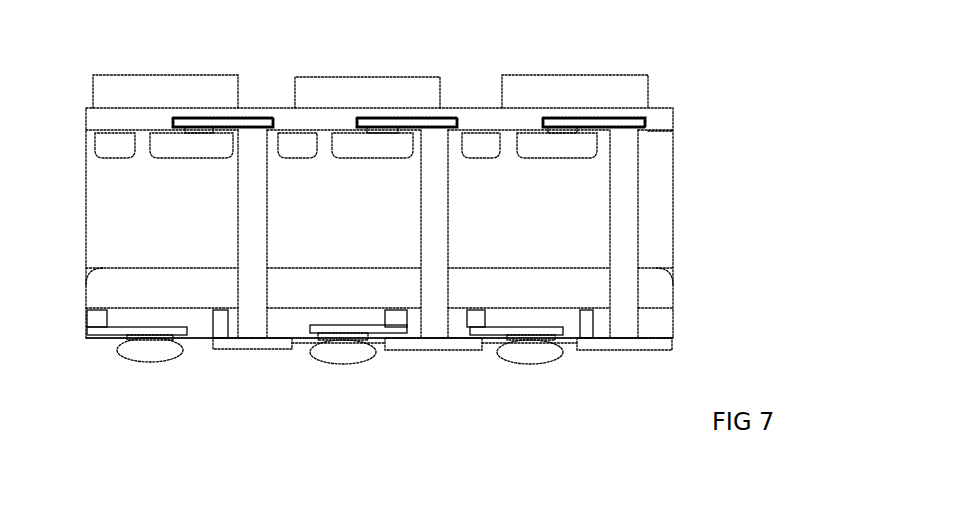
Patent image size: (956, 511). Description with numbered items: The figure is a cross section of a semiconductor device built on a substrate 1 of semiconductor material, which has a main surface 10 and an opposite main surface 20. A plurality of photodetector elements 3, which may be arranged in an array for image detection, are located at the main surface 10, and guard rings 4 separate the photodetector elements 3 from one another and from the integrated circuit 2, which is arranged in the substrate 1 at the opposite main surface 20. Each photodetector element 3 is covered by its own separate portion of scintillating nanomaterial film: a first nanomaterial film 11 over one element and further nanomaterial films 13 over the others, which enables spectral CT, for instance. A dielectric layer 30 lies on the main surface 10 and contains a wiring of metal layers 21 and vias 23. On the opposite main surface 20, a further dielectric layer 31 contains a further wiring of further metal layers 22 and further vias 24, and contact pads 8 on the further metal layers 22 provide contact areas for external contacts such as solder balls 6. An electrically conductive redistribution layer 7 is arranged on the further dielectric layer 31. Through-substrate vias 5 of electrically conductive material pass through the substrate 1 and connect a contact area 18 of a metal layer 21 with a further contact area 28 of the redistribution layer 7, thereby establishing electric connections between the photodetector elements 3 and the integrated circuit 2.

The substrate 1 is at (657, 237).
The integrated circuit 2 is at (652, 293).
The photodetector element 3 is at (192, 148).
The guard ring 4 is at (115, 148).
The through-substrate via 5 is at (255, 247).
The solder ball 6 is at (152, 350).
The redistribution layer 7 is at (417, 345).
The contact pad 8 is at (163, 340).
The main surface 10 is at (655, 137).
The first nanomaterial film 11 is at (142, 92).
The further nanomaterial film 13 is at (392, 86).
The contact area 18 is at (257, 130).
The opposite main surface 20 is at (338, 310).
The metal layer 21 is at (182, 127).
The further metal layer 22 is at (160, 328).
The via 23 is at (202, 130).
The further via 24 is at (103, 317).
The further contact area 28 is at (253, 342).
The dielectric layer 30 is at (657, 122).
The further dielectric layer 31 is at (648, 325).